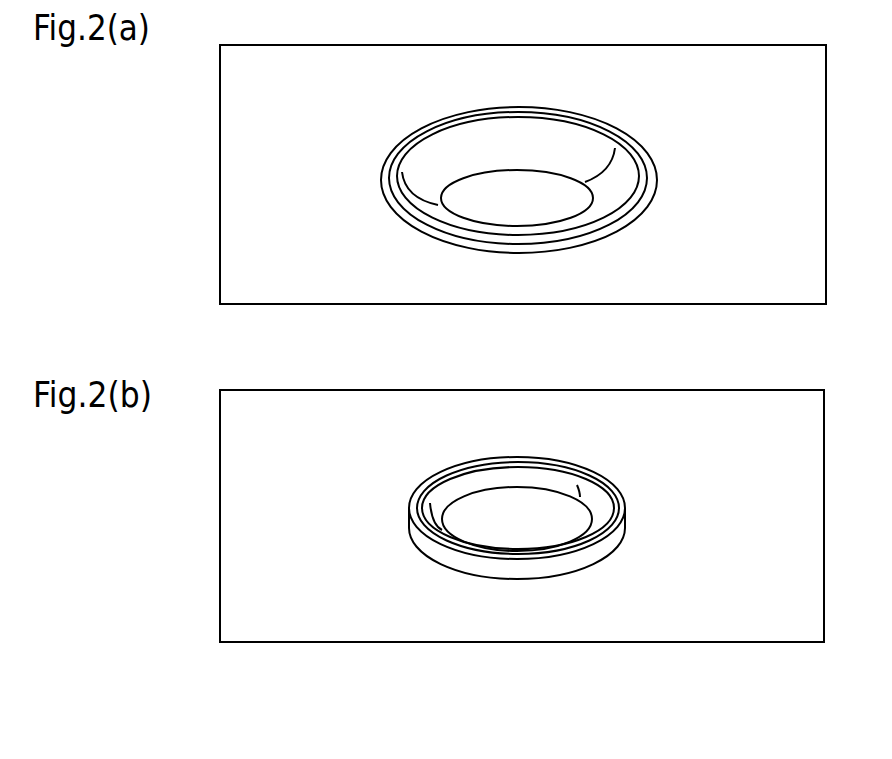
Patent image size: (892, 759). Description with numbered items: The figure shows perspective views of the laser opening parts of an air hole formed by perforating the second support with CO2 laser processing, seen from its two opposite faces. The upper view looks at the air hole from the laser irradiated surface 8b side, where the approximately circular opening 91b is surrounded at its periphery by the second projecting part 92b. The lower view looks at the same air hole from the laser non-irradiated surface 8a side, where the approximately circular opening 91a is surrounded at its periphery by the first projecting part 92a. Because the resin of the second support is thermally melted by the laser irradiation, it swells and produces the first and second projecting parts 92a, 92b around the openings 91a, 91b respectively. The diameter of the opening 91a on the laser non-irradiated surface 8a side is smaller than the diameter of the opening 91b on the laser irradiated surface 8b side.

In FIG. 2A, the laser irradiated surface 8b is at (263, 207).
In FIG. 2B, the laser non-irradiated surface 8a is at (263, 523).
In FIG. 2A, the opening on the laser irradiated surface side 91b is at (562, 133).
In FIG. 2A, the second projecting part 92b is at (648, 168).
In FIG. 2B, the opening on the laser non-irradiated surface side 91a is at (533, 510).
In FIG. 2B, the first projecting part 92a is at (620, 502).